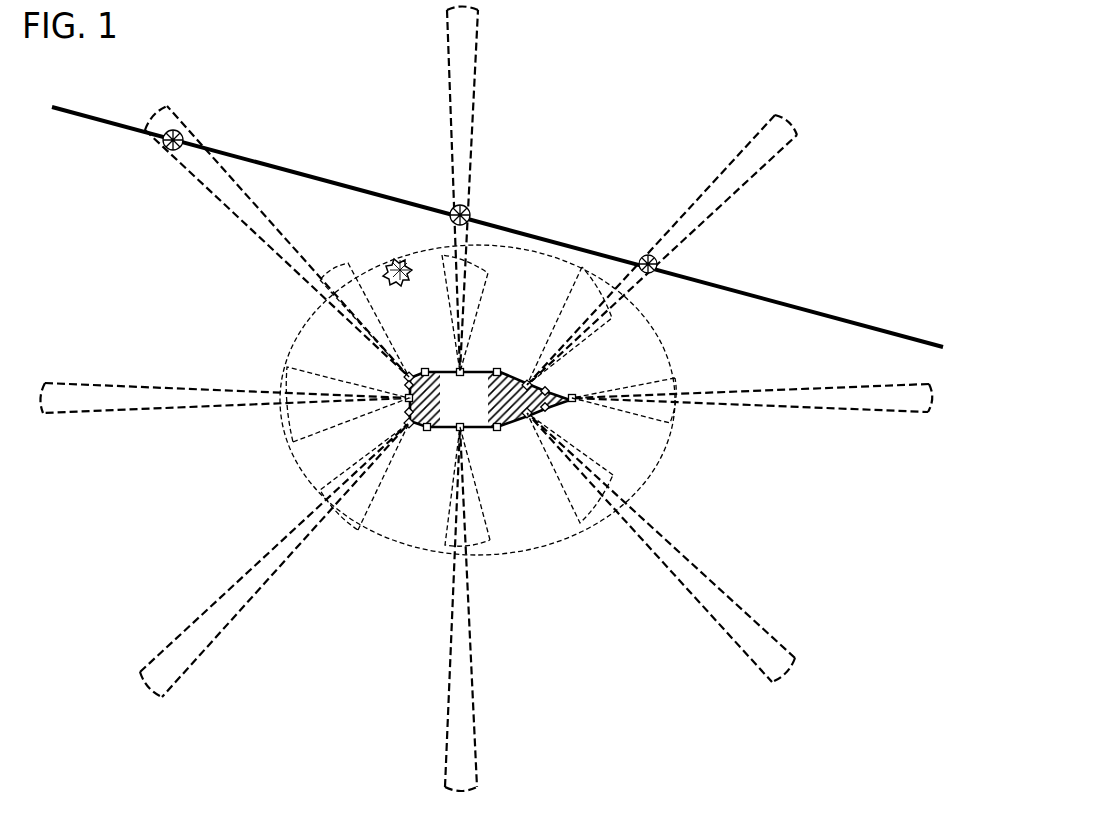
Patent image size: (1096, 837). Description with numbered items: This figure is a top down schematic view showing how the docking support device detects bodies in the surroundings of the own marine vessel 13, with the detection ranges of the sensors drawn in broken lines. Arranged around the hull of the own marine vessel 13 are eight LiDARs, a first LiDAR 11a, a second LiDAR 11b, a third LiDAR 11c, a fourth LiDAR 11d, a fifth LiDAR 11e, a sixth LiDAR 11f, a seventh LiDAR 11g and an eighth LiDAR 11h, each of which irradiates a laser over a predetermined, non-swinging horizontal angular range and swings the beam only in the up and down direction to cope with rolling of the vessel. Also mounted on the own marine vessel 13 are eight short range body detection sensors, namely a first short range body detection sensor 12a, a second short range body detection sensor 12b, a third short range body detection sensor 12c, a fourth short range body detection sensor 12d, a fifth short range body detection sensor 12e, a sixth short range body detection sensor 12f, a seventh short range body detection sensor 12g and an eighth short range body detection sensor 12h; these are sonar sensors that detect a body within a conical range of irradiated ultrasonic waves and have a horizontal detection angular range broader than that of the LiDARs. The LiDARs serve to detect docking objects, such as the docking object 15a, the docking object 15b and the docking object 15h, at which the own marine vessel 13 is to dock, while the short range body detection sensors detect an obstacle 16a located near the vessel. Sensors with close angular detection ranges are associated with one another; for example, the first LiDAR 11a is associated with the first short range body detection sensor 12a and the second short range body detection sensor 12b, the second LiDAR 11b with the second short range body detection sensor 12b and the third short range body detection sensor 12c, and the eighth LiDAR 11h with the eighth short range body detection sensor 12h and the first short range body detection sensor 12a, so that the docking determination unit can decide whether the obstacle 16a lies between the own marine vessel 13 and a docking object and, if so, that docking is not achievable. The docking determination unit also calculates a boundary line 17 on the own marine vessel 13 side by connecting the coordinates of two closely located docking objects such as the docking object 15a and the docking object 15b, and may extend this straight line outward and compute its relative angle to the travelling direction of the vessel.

The first LiDAR 11a is at (460, 370).
The second LiDAR 11b is at (528, 383).
The third LiDAR 11c is at (575, 398).
The fourth LiDAR 11d is at (530, 414).
The fifth LiDAR 11e is at (462, 430).
The sixth LiDAR 11f is at (409, 426).
The seventh LiDAR 11g is at (407, 400).
The eighth LiDAR 11h is at (407, 377).
The first short range body detection sensor 12a is at (425, 370).
The second short range body detection sensor 12b is at (497, 370).
The third short range body detection sensor 12c is at (547, 391).
The fourth short range body detection sensor 12d is at (547, 407).
The fifth short range body detection sensor 12e is at (498, 430).
The sixth short range body detection sensor 12f is at (427, 430).
The seventh short range body detection sensor 12g is at (408, 413).
The eighth short range body detection sensor 12h is at (408, 386).
The own marine vessel 13 is at (455, 413).
The docking object 15a is at (451, 218).
The docking object 15b is at (653, 270).
The docking object 15h is at (164, 146).
The obstacle 16a is at (387, 268).
The boundary line 17 is at (808, 310).